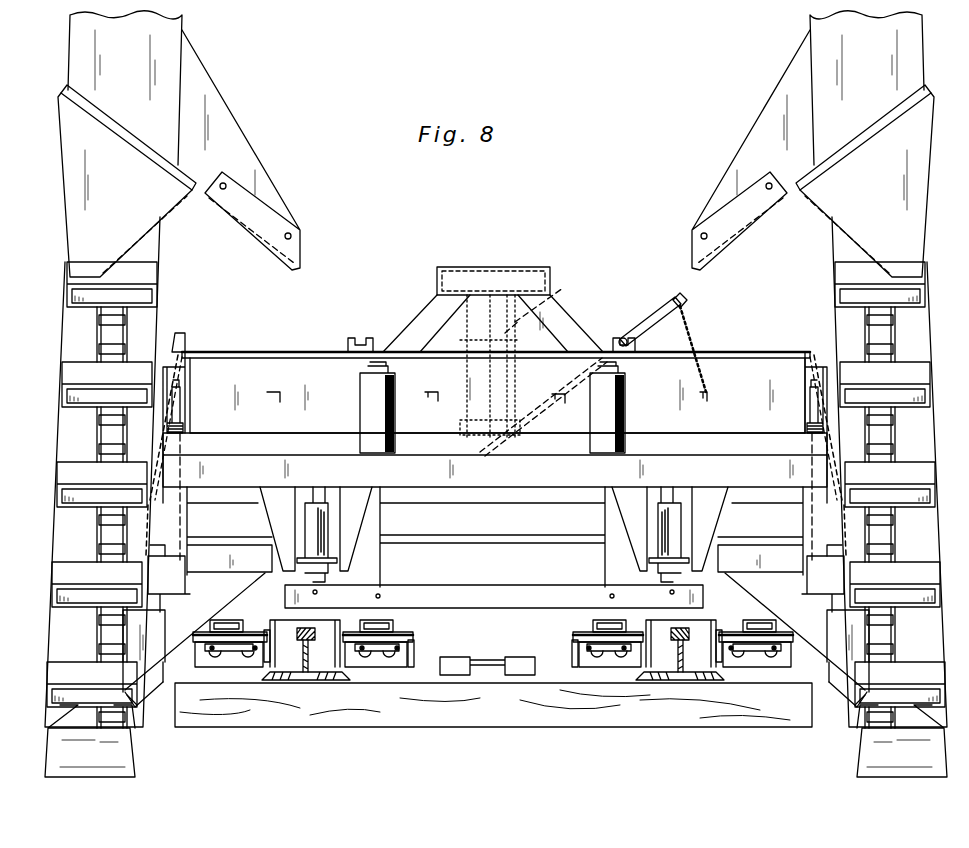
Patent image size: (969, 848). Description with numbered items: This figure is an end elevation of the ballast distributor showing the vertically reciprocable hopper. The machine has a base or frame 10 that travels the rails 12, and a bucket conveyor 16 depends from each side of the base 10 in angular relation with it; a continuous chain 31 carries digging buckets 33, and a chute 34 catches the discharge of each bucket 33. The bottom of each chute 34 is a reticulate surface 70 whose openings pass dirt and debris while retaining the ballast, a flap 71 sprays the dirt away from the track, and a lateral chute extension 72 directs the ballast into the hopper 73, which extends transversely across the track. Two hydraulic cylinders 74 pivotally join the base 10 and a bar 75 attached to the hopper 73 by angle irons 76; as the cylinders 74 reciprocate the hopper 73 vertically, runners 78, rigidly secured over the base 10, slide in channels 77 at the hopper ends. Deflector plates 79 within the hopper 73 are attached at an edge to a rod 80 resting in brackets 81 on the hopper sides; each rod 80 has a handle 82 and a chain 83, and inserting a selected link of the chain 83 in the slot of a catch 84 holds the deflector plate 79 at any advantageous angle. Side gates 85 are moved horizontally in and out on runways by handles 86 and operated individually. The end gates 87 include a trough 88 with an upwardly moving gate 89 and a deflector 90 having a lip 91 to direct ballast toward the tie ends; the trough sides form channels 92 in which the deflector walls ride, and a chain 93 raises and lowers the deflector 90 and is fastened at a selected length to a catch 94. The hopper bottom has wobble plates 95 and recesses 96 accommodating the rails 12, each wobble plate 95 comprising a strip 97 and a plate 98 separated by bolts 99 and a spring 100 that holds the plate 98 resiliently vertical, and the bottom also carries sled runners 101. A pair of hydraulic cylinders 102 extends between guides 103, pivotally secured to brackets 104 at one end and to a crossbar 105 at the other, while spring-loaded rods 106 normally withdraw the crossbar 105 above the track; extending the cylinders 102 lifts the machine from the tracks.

The base or frame 10 is at (742, 428).
The rails 12 is at (296, 634).
The bucket conveyor 16 is at (60, 528).
The continuous chain 31 is at (97, 421).
The digging bucket 33 is at (75, 377).
The chute 34 is at (72, 40).
The reticulate surface 70 is at (66, 88).
The flap 71 is at (70, 197).
The lateral chute extension 72 is at (241, 134).
The hopper 73 is at (276, 353).
The hydraulic cylinders 74 is at (548, 300).
The bar 75 is at (523, 282).
The angle irons 76 is at (423, 317).
The channels 77 is at (178, 340).
The runners 78 is at (156, 428).
The deflector plates 79 is at (543, 407).
The rod 80 is at (623, 338).
The brackets 81 is at (350, 349).
The handle 82 is at (684, 302).
The chain 83 is at (690, 342).
The catch 84 is at (432, 398).
The side gates 85 is at (256, 630).
The handles 86 is at (212, 620).
The end gates 87 is at (250, 580).
The trough 88 is at (150, 643).
The gate 89 is at (172, 563).
The deflector 90 is at (132, 683).
The lip 91 is at (137, 702).
The channels 92 is at (155, 600).
The chain 93 is at (158, 543).
The catch 94 is at (184, 349).
The wobble plates 95 is at (222, 668).
The recesses 96 is at (328, 619).
The strip 97 is at (408, 655).
The plate 98 is at (270, 658).
The bolts 99 is at (390, 668).
The spring 100 is at (252, 668).
The sled runners 101 is at (518, 660).
The hydraulic cylinders 102 is at (335, 571).
The guides 103 is at (273, 508).
The brackets 104 is at (333, 482).
The crossbar 105 is at (520, 588).
The spring-loaded rods 106 is at (382, 546).